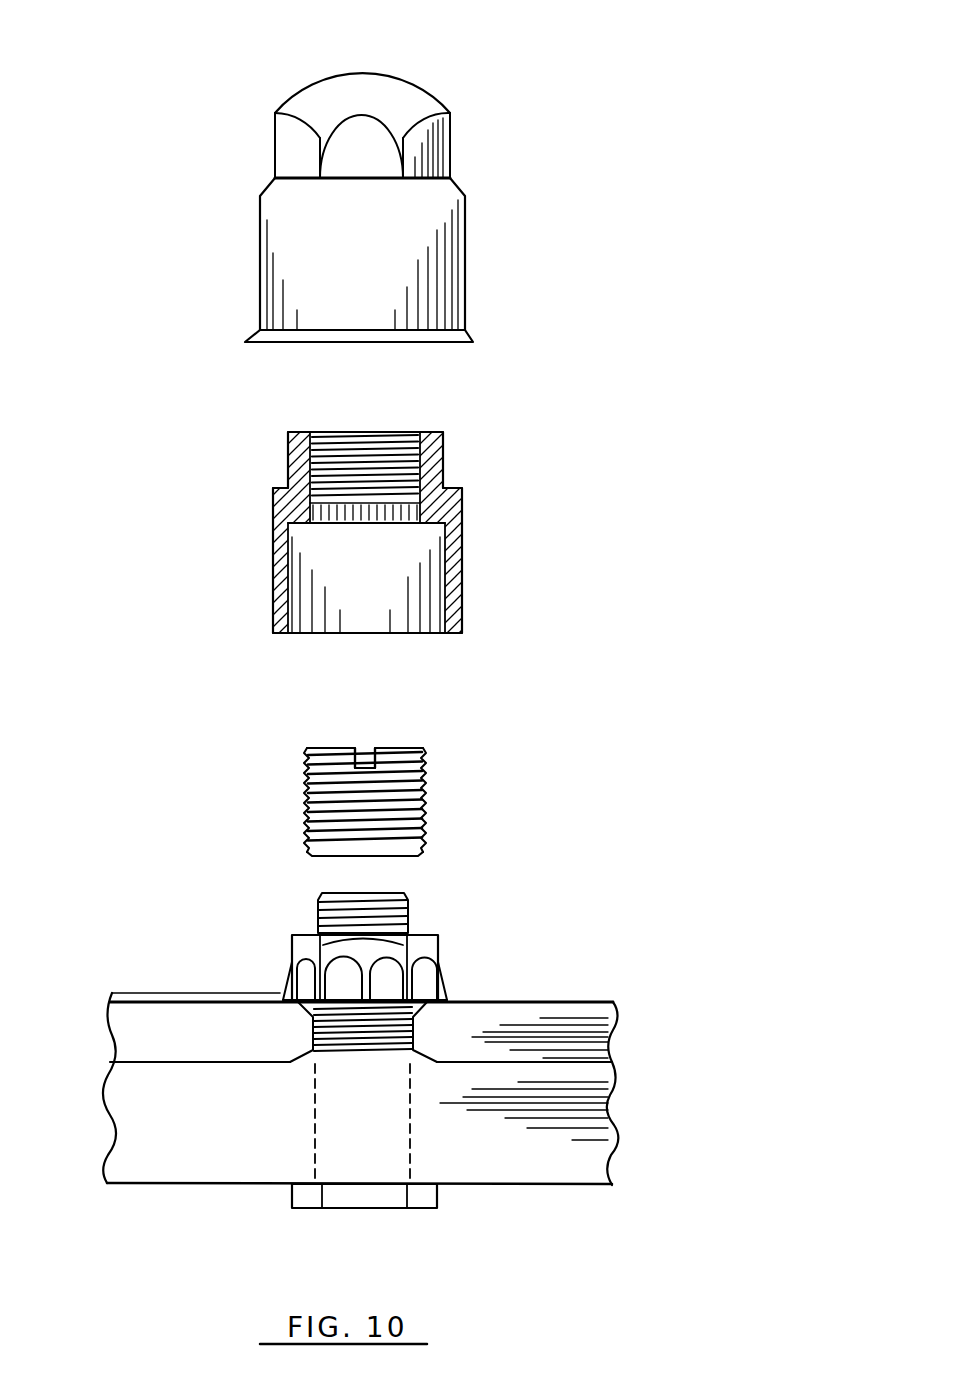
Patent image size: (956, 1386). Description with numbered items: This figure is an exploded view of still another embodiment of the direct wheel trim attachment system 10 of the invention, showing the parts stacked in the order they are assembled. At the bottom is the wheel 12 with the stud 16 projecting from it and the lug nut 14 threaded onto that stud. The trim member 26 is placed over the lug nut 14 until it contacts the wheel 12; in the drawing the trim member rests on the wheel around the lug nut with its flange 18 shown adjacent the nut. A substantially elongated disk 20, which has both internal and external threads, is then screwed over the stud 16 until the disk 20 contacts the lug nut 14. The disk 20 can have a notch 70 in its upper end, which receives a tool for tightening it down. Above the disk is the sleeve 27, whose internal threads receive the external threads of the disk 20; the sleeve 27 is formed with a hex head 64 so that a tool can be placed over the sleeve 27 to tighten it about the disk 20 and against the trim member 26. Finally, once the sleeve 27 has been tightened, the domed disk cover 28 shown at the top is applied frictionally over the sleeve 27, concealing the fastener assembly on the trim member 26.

The direct wheel trim attachment system 10 is at (172, 78).
The wheel 12 is at (610, 1050).
The lug nut 14 is at (438, 947).
The stud 16 is at (410, 908).
The washer flange 18 is at (448, 993).
The substantially elongated disk 20 is at (423, 807).
The trim member 26 is at (572, 998).
The sleeve 27 is at (462, 562).
The disk cover 28 is at (465, 222).
The hex head 64 is at (442, 435).
The notch 70 is at (365, 758).